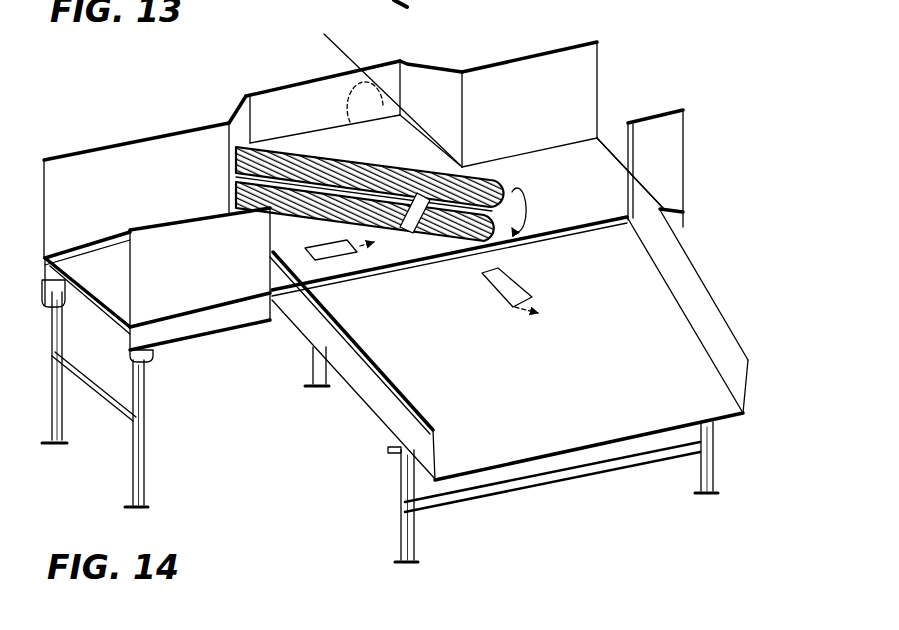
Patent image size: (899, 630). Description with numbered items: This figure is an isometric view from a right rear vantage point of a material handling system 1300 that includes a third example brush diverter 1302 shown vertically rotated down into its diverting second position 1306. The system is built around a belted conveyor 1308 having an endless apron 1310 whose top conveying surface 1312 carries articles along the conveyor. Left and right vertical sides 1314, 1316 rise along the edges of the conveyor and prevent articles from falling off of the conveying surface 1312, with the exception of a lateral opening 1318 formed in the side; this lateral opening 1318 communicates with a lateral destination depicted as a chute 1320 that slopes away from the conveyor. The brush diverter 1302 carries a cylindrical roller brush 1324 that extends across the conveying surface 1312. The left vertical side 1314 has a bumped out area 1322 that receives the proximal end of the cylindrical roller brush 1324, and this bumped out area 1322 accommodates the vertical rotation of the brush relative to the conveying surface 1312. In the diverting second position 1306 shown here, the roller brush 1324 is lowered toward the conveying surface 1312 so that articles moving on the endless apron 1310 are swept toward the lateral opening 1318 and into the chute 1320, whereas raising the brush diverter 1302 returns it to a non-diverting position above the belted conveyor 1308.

The material handling system 1300 is at (664, 47).
The third example brush diverter 1302 is at (273, 142).
The diverting second position 1306 is at (303, 64).
The belted conveyor 1308 is at (590, 198).
The endless apron 1310 is at (553, 170).
The top conveying surface 1312 is at (616, 212).
The left vertical side 1314 is at (118, 138).
The right vertical side 1316 is at (177, 282).
The lateral opening 1318 is at (627, 215).
The chute 1320 is at (557, 432).
The bumped out area 1322 is at (319, 29).
The cylindrical roller brush 1324 is at (449, 168).